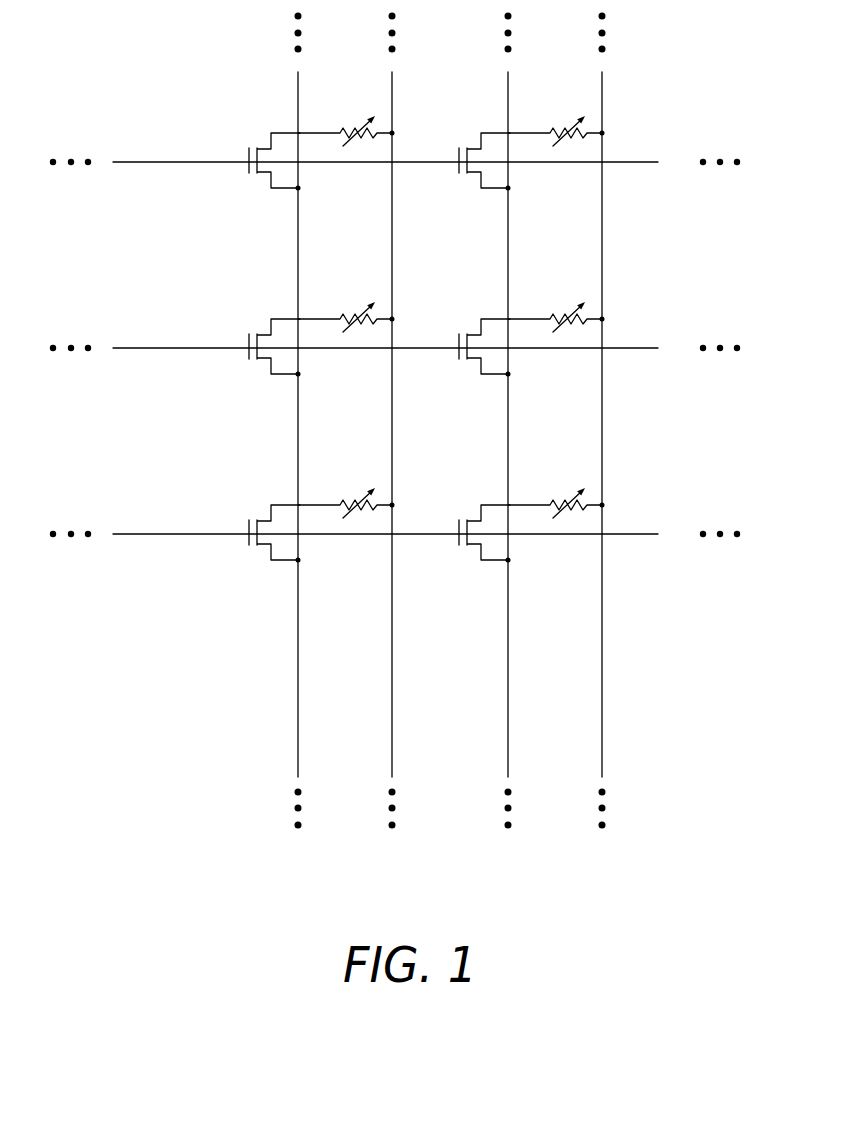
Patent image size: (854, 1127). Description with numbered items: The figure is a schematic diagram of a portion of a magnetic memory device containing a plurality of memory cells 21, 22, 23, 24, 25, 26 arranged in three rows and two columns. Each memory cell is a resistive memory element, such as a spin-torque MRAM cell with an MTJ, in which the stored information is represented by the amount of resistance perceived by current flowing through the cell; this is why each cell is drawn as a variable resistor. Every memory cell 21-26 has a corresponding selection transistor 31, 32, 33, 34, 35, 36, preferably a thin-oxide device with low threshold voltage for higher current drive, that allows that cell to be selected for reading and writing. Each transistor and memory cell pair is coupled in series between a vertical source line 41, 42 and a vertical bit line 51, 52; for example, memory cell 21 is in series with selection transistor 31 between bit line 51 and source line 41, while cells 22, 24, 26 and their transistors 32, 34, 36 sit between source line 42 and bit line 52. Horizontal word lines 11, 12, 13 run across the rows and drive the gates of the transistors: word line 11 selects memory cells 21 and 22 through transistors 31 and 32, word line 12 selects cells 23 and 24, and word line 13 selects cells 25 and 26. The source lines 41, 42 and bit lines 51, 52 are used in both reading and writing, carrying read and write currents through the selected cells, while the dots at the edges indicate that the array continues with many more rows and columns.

The word line 11 is at (161, 161).
The word line 12 is at (161, 347).
The word line 13 is at (161, 533).
The memory cell 21 is at (348, 122).
The memory cell 22 is at (558, 122).
The memory cell 23 is at (348, 308).
The memory cell 24 is at (558, 308).
The memory cell 25 is at (348, 494).
The memory cell 26 is at (558, 494).
The selection transistor 31 is at (255, 177).
The selection transistor 32 is at (465, 177).
The selection transistor 33 is at (255, 363).
The selection transistor 34 is at (465, 363).
The selection transistor 35 is at (255, 549).
The selection transistor 36 is at (465, 549).
The source line 41 is at (293, 717).
The source line 42 is at (503, 717).
The bit line 51 is at (388, 672).
The bit line 52 is at (598, 672).